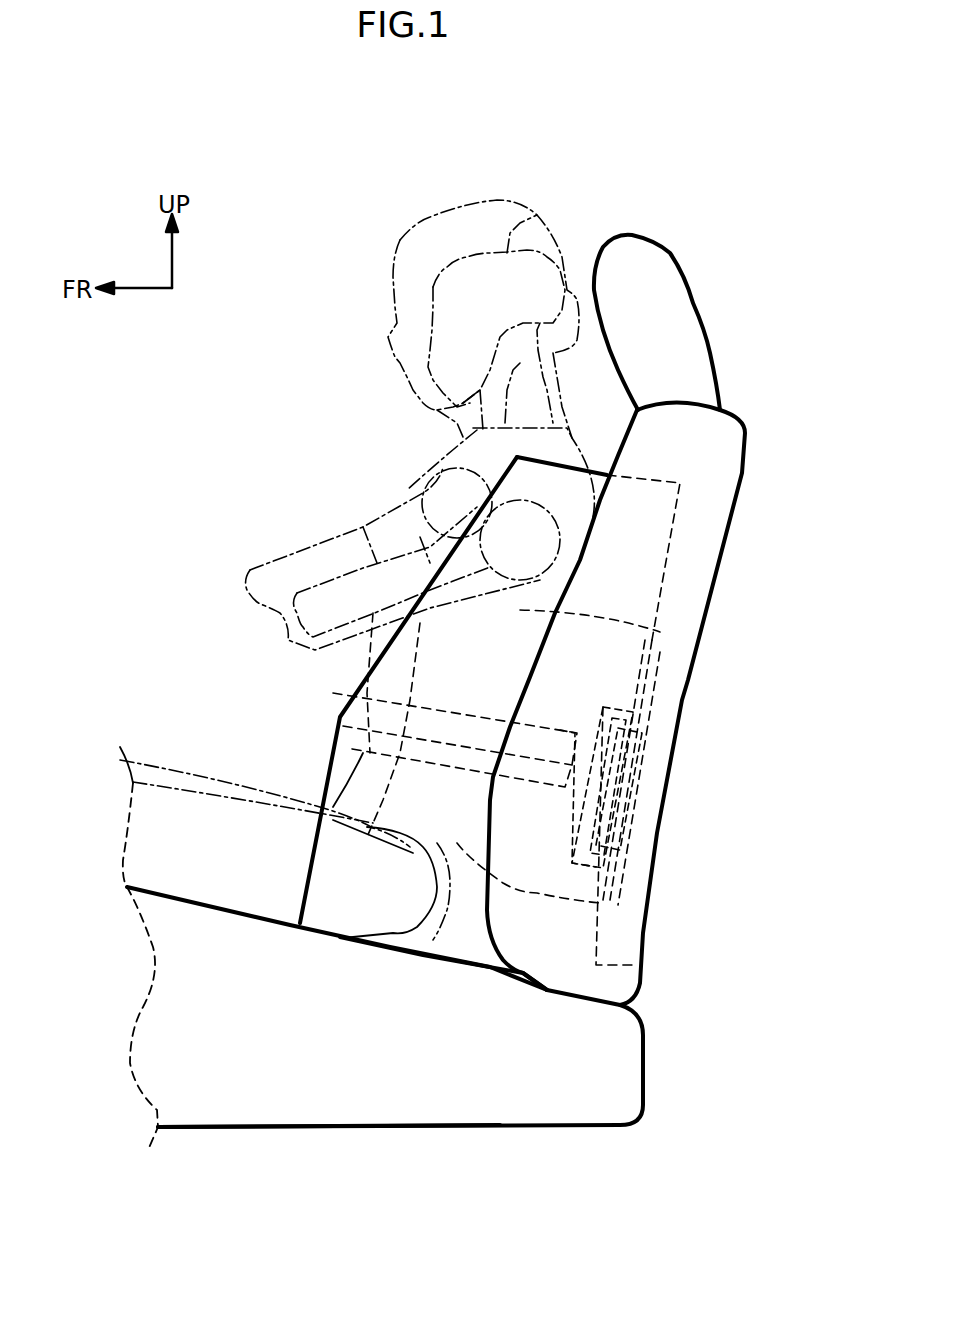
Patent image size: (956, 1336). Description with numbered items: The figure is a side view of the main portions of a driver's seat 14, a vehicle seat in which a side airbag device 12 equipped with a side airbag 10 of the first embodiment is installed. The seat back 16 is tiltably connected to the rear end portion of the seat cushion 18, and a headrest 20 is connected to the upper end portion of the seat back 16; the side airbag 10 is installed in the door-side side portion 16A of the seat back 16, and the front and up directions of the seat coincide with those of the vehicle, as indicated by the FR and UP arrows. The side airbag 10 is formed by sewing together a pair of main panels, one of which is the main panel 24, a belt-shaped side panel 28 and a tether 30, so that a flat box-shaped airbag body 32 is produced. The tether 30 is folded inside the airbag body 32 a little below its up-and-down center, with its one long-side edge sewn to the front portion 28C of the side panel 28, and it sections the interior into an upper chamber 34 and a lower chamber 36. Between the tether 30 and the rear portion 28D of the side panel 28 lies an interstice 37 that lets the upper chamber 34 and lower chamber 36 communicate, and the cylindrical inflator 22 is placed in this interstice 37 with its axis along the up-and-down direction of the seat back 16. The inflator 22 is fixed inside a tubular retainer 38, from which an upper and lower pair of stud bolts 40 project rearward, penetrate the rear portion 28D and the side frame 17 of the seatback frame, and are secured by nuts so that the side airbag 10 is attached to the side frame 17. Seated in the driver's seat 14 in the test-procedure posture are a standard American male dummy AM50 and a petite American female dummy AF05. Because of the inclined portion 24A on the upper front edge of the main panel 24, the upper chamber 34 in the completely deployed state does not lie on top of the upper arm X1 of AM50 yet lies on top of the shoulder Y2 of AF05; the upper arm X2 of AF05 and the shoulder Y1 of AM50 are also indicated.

The side airbag 10 is at (687, 538).
The side airbag device 12 is at (730, 713).
The driver's seat 14 is at (417, 1152).
The seat back 16 is at (740, 473).
The door-side side portion 16A is at (535, 657).
The side frame 17 is at (668, 660).
The seat cushion 18 is at (273, 1128).
The headrest 20 is at (687, 288).
The inflator 22 is at (627, 780).
The main panel 24 is at (450, 927).
The inclined portion 24A is at (373, 650).
The side panel 28 is at (300, 903).
The front portion 28C is at (313, 840).
The rear portion 28D is at (640, 988).
The tether 30 is at (333, 753).
The airbag body 32 is at (663, 588).
The upper chamber 34 is at (660, 632).
The lower chamber 36 is at (600, 903).
The interstice 37 is at (620, 812).
The retainer 38 is at (580, 868).
The stud bolts 40 is at (640, 737).
The crash-test dummy of a standard American male AM50 is at (430, 217).
The crash-test dummy of a petite American female AF05 is at (537, 215).
The upper arm of AM50 X1 is at (317, 540).
The upper arm of AF05 X2 is at (350, 527).
The shoulder of AM50 Y1 is at (407, 490).
The shoulder of AF05 Y2 is at (440, 463).